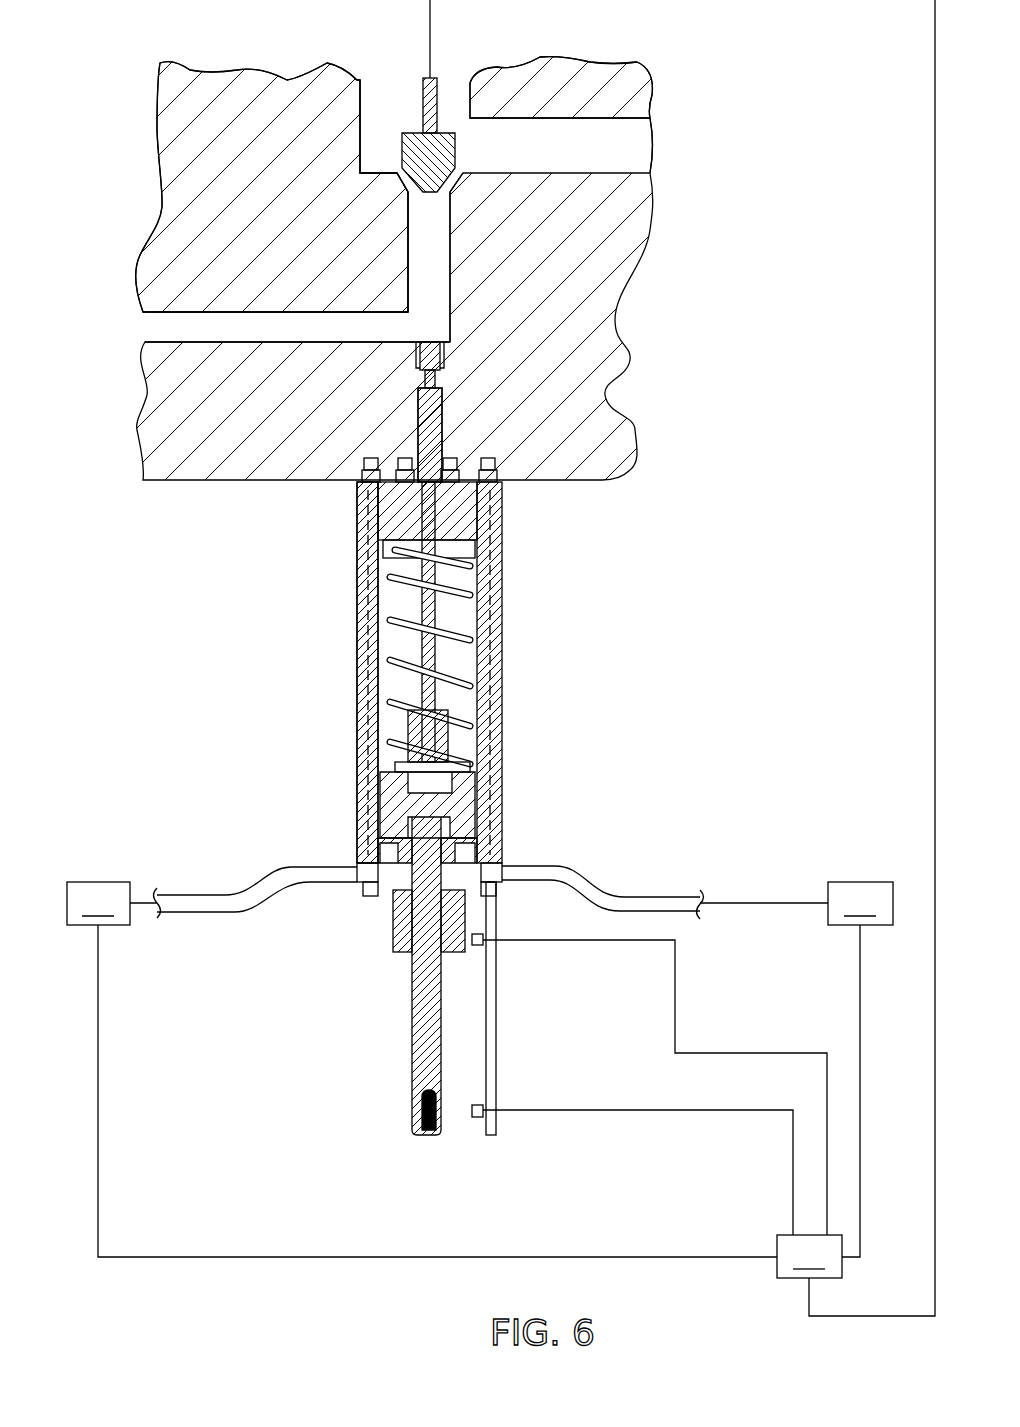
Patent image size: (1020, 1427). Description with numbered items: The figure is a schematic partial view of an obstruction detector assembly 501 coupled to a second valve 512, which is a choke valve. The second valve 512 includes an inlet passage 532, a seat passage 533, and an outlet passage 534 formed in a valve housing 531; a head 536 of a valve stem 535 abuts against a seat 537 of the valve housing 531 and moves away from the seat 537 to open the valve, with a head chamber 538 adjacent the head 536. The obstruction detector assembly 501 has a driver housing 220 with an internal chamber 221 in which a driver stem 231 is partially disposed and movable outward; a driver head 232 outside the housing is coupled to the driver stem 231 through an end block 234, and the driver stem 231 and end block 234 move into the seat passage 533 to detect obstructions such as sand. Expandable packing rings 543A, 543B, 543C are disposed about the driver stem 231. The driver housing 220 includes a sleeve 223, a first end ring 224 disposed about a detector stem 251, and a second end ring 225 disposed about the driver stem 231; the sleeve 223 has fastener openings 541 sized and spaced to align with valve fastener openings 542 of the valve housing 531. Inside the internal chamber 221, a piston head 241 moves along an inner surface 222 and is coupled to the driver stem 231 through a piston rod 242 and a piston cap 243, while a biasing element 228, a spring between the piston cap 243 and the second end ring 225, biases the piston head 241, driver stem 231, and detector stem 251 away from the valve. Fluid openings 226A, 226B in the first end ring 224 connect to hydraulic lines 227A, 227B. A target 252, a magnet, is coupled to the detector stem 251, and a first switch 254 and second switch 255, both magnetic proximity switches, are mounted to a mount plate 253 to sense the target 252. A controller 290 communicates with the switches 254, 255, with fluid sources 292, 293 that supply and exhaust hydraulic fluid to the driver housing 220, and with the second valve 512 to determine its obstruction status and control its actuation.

The second valve 512 is at (205, 128).
The valve housing 531 is at (180, 172).
The inlet passage 532 is at (170, 326).
The seat passage 533 is at (420, 232).
The outlet passage 534 is at (572, 135).
The valve stem 535 is at (408, 92).
The head 536 is at (402, 148).
The seat 537 is at (460, 180).
The head chamber 538 is at (372, 103).
The driver head 232 is at (442, 356).
The end block 234 is at (418, 352).
The expandable packing ring 543A is at (443, 435).
The expandable packing ring 543B is at (418, 422).
The expandable packing ring 543C is at (424, 400).
The valve fastener openings 542 is at (365, 462).
The driver housing 220 is at (443, 689).
The internal chamber 221 is at (462, 628).
The inner surface 222 is at (357, 626).
The sleeve 223 is at (360, 662).
The second end ring 225 is at (390, 508).
The biasing element 228 is at (474, 563).
The driver stem 231 is at (440, 605).
The piston head 241 is at (392, 792).
The piston rod 242 is at (412, 728).
The piston cap 243 is at (396, 762).
The fluid opening 226A is at (505, 850).
The fluid opening 226B is at (357, 846).
The hydraulic line 227A is at (650, 895).
The hydraulic line 227B is at (228, 895).
The fastener openings 541 is at (357, 600).
The first end ring 224 is at (400, 935).
The detector stem 251 is at (420, 1005).
The target 252 is at (425, 1110).
The mount plate 253 is at (497, 1020).
The first switch 254 is at (485, 1112).
The second switch 255 is at (485, 942).
The controller 290 is at (809, 1256).
The fluid source 292 is at (796, 1069).
The fluid source 293 is at (422, 1069).
The obstruction detector assembly 501 is at (275, 925).